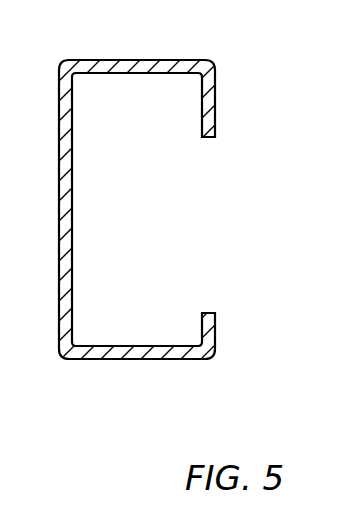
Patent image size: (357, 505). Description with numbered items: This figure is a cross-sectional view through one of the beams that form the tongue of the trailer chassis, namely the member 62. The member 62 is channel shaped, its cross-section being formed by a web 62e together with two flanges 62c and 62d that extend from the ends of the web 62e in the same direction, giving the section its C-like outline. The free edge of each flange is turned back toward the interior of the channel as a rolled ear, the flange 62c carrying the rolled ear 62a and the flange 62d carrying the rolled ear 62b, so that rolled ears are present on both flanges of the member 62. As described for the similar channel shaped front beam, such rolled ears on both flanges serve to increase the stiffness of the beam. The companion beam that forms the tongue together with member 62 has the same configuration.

The member 62 is at (166, 201).
The rolled ear 62a is at (210, 103).
The rolled ear 62b is at (212, 332).
The flange 62c is at (150, 60).
The flange 62d is at (135, 352).
The web 62e is at (67, 152).